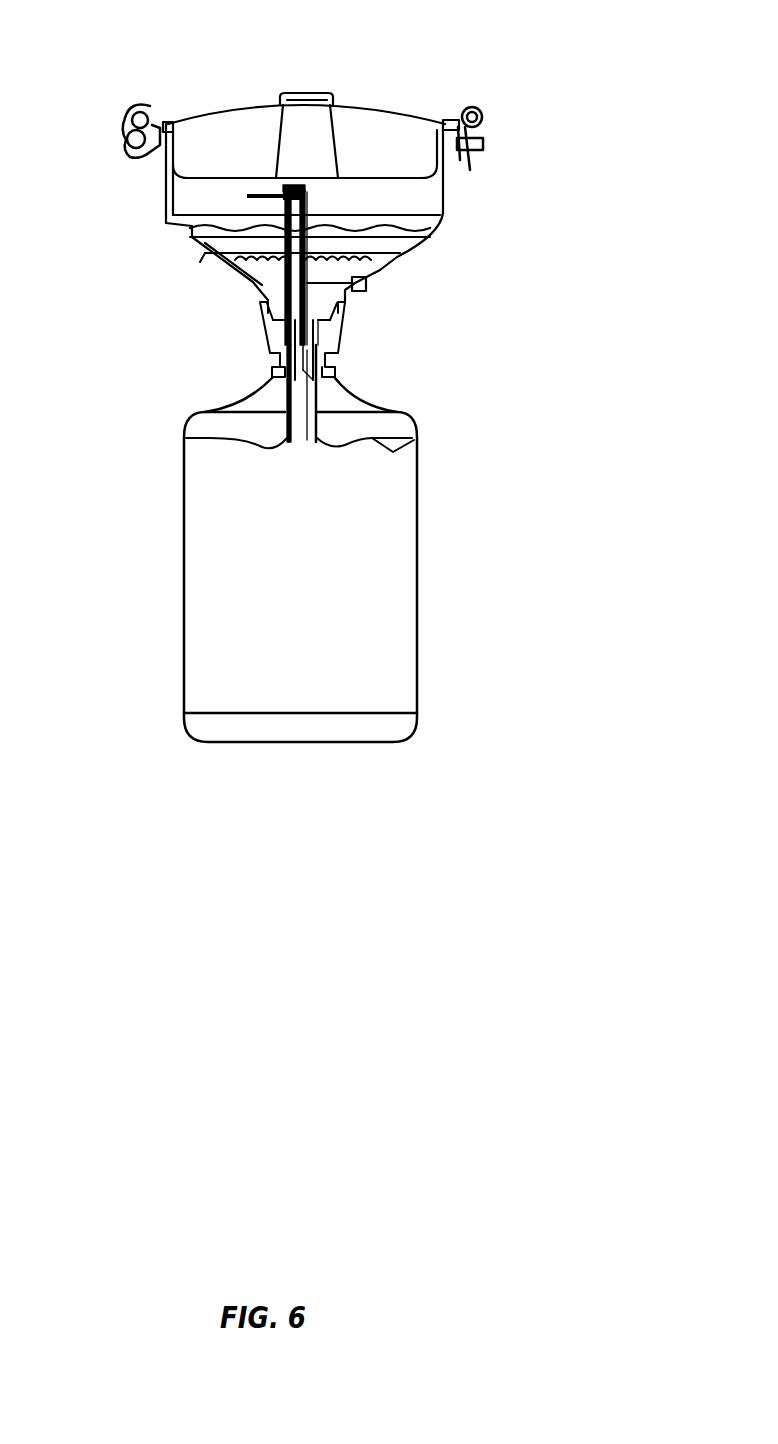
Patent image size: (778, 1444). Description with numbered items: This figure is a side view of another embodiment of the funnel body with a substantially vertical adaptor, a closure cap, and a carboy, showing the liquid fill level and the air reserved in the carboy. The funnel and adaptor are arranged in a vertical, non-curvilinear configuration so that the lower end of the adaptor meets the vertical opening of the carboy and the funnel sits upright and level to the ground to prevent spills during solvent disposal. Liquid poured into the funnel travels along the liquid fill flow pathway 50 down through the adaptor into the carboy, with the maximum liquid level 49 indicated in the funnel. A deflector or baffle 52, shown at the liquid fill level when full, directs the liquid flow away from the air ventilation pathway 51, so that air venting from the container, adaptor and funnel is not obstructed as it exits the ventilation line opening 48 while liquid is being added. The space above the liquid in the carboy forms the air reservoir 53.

The ventilation line opening 48 is at (277, 190).
The maximum liquid level 49 is at (383, 268).
The liquid fill flow pathway 50 is at (307, 268).
The air ventilation pathway 51 is at (262, 306).
The deflector or baffle 52 is at (393, 448).
The air reservoir 53 is at (230, 422).